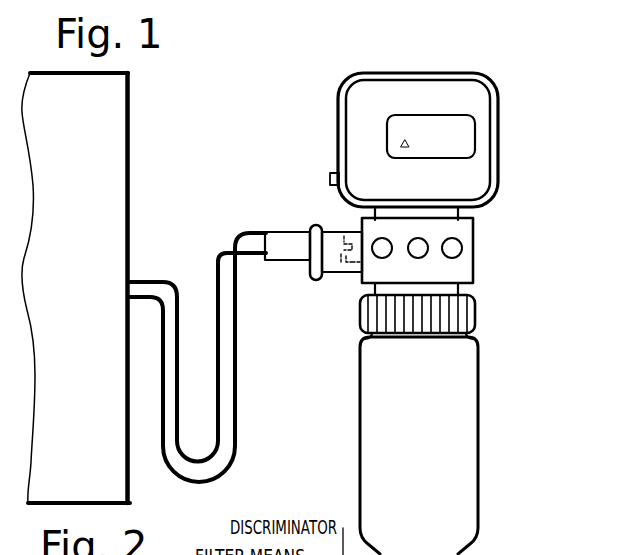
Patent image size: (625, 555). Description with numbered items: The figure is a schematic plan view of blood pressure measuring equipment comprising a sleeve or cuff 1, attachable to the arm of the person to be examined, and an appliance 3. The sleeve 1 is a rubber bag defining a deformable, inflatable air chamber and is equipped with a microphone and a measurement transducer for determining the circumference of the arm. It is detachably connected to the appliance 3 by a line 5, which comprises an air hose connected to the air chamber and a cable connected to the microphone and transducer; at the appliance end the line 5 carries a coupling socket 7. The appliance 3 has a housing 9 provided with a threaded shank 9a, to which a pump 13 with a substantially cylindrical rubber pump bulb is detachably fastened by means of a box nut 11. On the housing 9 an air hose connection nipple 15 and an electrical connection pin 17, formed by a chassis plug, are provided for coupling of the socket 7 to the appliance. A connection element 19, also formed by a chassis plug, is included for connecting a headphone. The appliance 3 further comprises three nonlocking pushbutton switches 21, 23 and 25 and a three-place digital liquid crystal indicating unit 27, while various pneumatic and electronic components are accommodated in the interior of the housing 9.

The sleeve 1 is at (130, 157).
The appliance 3 is at (338, 126).
The line 5 is at (235, 405).
The coupling socket 7 is at (290, 261).
The housing 9 is at (473, 229).
The threaded shank 9a is at (458, 290).
The box nut 11 is at (476, 315).
The pump 13 is at (478, 422).
The air hose connection nipple 15 is at (351, 274).
The electrical connection pin 17 is at (345, 233).
The connection element 19 is at (333, 173).
The nonlocking pushbutton switch 21 is at (382, 258).
The nonlocking pushbutton switch 23 is at (418, 258).
The nonlocking pushbutton switch 25 is at (462, 253).
The digital liquid crystal indicating unit 27 is at (475, 132).